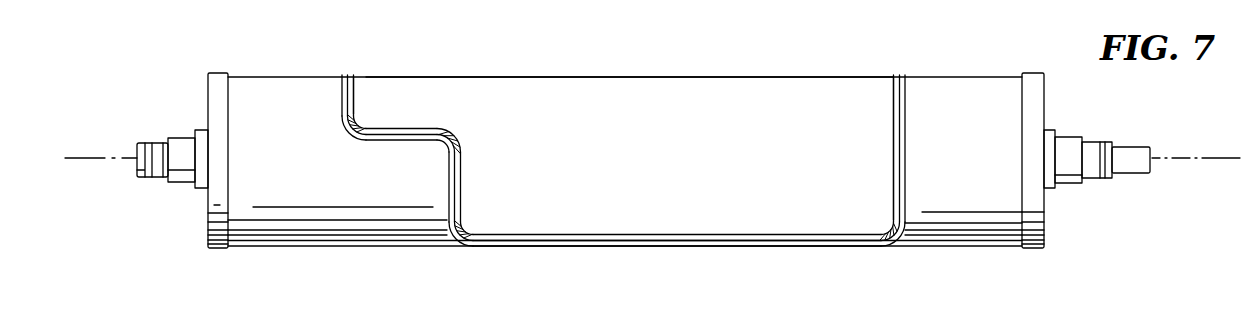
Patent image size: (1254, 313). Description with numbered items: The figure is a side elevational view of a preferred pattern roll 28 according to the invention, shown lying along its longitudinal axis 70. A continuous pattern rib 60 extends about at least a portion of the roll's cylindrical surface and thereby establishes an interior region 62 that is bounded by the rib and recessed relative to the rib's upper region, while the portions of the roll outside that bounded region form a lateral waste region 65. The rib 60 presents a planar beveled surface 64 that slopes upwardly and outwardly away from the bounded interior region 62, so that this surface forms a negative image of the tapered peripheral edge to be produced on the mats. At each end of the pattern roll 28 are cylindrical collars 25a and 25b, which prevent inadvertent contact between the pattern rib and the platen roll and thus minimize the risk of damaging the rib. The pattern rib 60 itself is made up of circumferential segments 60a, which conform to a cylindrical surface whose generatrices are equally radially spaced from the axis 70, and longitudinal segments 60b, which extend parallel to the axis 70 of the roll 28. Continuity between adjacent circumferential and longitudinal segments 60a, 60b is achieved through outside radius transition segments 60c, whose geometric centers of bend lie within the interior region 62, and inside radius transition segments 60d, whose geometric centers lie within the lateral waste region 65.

The cylindrical collar 25a is at (229, 73).
The cylindrical collar 25b is at (1033, 82).
The pattern roll 28 is at (958, 67).
The pattern rib 60 is at (591, 142).
The circumferential segment 60a is at (332, 106).
The longitudinal segment 60b is at (380, 150).
The outside radius transition segment 60c is at (367, 116).
The inside radius transition segment 60d is at (458, 123).
The interior region 62 is at (628, 122).
The beveled surface 64 is at (356, 88).
The waste region 65 is at (298, 171).
The longitudinal axis 70 is at (1167, 157).